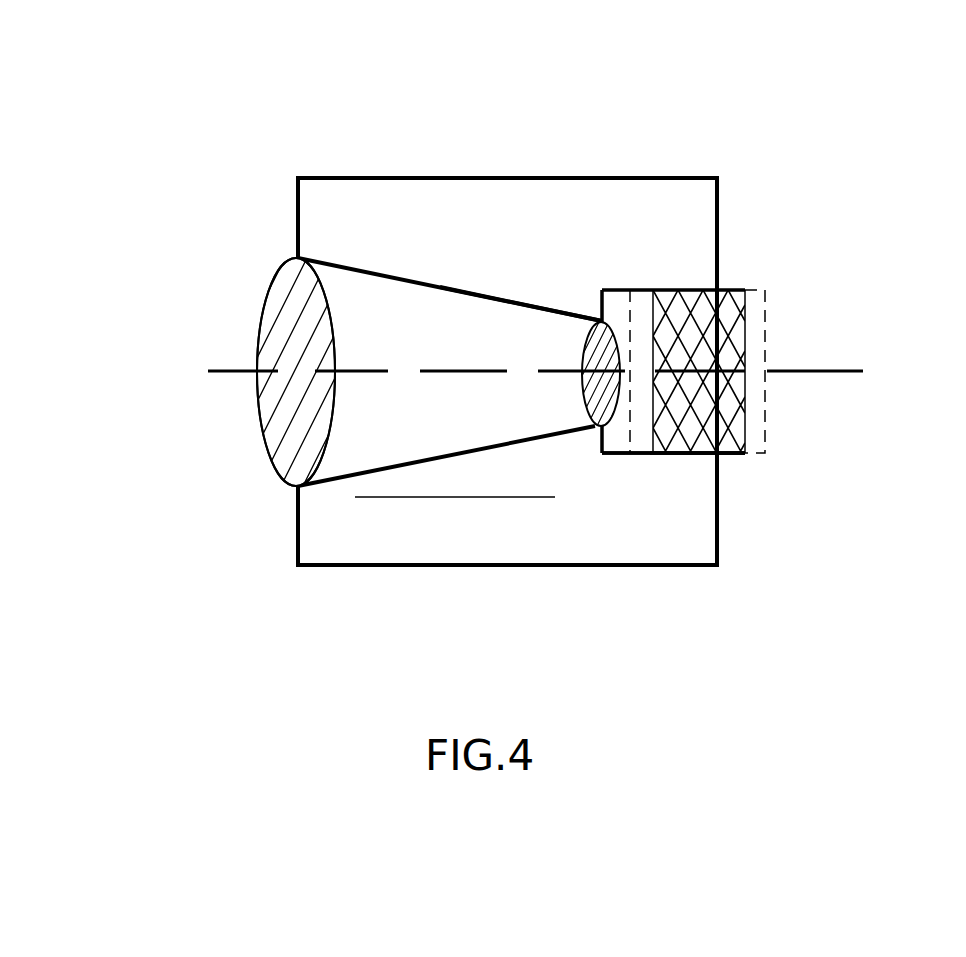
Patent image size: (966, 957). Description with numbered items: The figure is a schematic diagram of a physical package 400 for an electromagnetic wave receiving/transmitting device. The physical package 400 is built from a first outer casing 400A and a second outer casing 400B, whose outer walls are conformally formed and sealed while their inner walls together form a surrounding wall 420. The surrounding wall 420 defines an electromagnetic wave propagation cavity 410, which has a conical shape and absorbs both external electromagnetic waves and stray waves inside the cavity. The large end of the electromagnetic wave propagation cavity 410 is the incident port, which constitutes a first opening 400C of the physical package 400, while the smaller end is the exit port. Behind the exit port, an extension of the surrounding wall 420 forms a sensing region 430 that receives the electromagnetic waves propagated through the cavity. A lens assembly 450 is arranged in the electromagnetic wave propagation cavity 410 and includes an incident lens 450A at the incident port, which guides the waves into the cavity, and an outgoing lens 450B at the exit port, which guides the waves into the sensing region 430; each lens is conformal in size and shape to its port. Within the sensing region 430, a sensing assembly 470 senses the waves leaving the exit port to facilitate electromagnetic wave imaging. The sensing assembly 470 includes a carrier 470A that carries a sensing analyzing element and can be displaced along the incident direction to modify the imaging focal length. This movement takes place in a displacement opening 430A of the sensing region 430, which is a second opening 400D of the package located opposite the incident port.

The physical package 400 is at (263, 152).
The first outer casing 400A is at (440, 205).
The second outer casing 400B is at (507, 546).
The first opening 400C is at (288, 340).
The second opening 400D is at (723, 459).
The electromagnetic wave propagation cavity 410 is at (450, 372).
The surrounding wall 420 is at (482, 292).
The sensing region 430 is at (620, 298).
The displacement opening 430A is at (768, 503).
The lens assembly 450 is at (460, 497).
The incident lens 450A is at (355, 497).
The outgoing lens 450B is at (555, 497).
The sensing assembly 470 is at (745, 316).
The carrier 470A is at (819, 315).